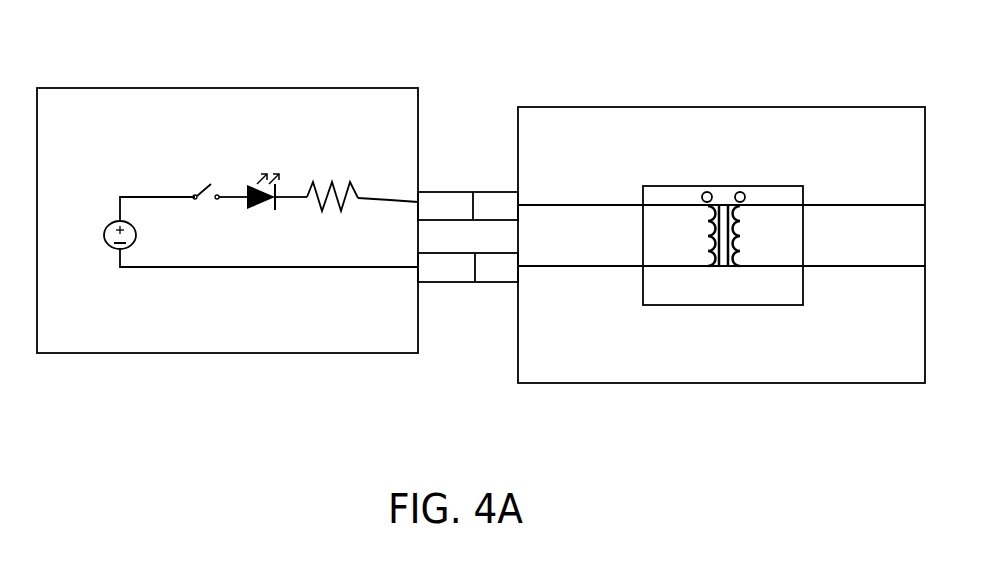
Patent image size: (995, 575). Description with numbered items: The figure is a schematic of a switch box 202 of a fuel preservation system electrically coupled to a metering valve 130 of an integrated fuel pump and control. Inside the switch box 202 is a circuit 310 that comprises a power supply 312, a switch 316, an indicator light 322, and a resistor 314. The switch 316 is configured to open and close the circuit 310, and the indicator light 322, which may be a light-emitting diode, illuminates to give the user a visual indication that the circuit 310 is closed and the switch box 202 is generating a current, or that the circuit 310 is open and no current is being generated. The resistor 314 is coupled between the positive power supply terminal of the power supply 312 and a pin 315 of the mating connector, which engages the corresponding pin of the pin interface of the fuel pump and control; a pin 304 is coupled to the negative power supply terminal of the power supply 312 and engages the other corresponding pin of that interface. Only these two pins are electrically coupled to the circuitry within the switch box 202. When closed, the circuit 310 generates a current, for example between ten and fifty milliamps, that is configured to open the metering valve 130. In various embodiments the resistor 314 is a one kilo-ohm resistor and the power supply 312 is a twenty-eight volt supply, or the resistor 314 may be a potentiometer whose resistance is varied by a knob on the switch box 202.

The metering valve 130 is at (687, 147).
The switch box 202 is at (79, 191).
The pin 304 is at (468, 267).
The circuit 310 is at (124, 164).
The power supply 312 is at (110, 244).
The resistor 314 is at (353, 183).
The pin 315 is at (468, 206).
The switch 316 is at (208, 184).
The indicator light 322 is at (251, 200).